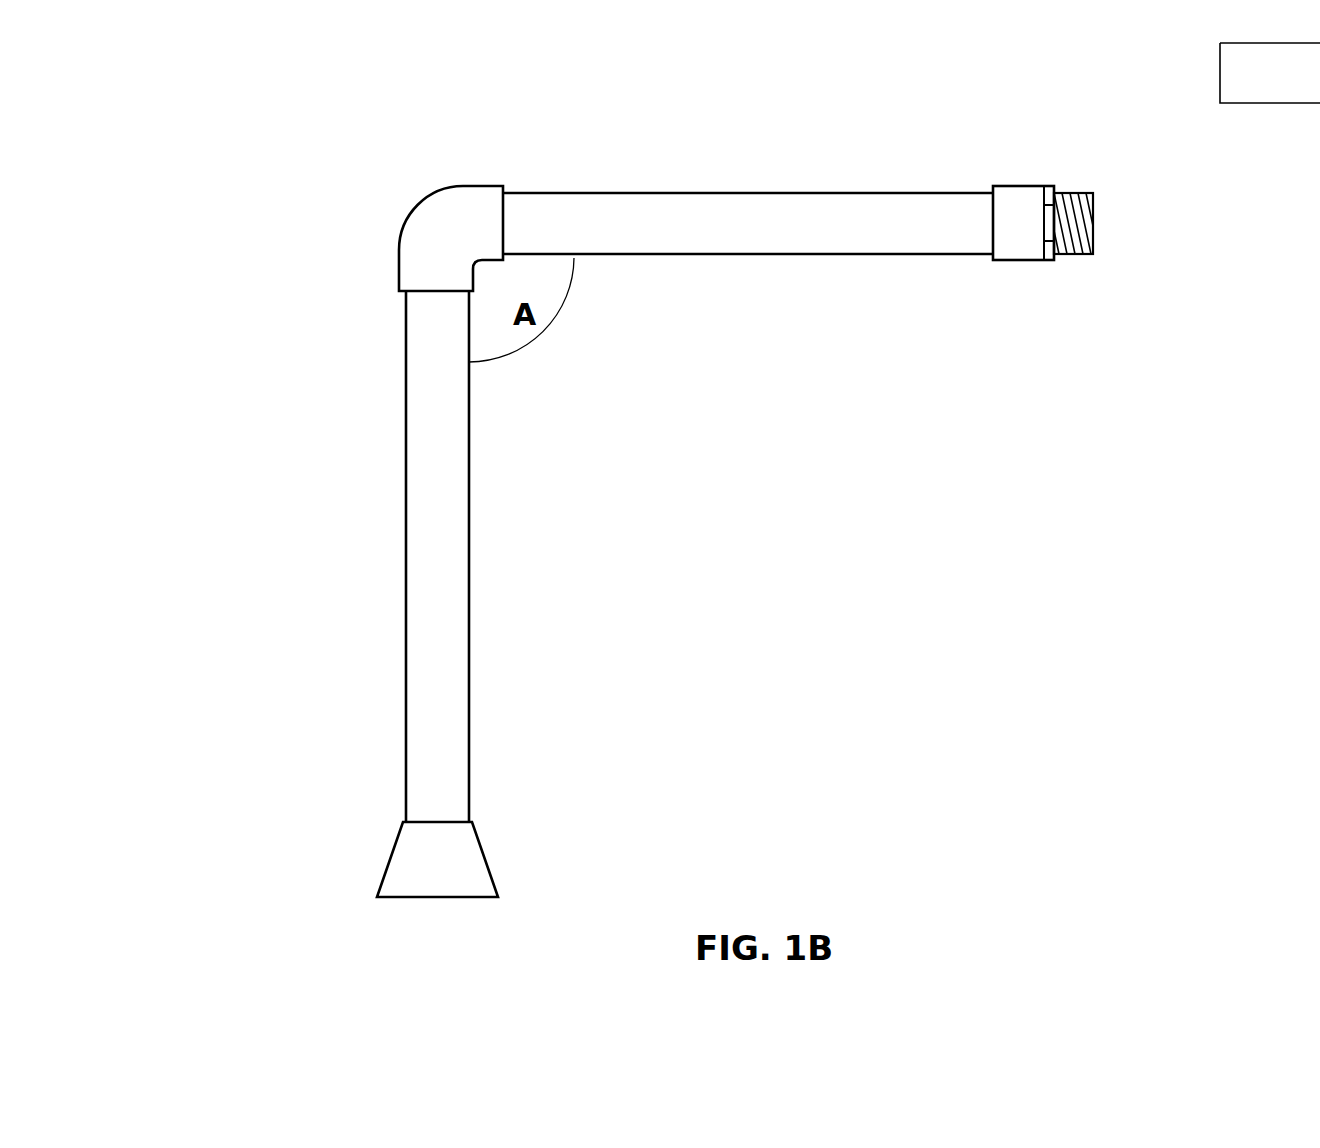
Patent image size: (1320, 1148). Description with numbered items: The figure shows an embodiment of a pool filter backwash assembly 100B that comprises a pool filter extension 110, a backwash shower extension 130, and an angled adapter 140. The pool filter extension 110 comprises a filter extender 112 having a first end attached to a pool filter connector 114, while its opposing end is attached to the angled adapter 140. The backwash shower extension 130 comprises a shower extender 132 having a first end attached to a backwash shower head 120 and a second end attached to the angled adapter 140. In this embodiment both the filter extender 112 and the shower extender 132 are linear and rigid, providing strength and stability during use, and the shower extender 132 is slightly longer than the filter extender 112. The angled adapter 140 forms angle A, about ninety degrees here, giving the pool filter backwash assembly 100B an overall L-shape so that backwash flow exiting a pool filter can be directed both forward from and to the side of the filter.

The pool filter backwash assembly 100B is at (1183, 148).
The pool filter extension 110 is at (798, 216).
The filter extender 112 is at (759, 268).
The pool filter connector 114 is at (1035, 274).
The backwash shower head 120 is at (510, 859).
The backwash shower extension 130 is at (440, 594).
The shower extender 132 is at (482, 535).
The angled adapter 140 is at (390, 223).